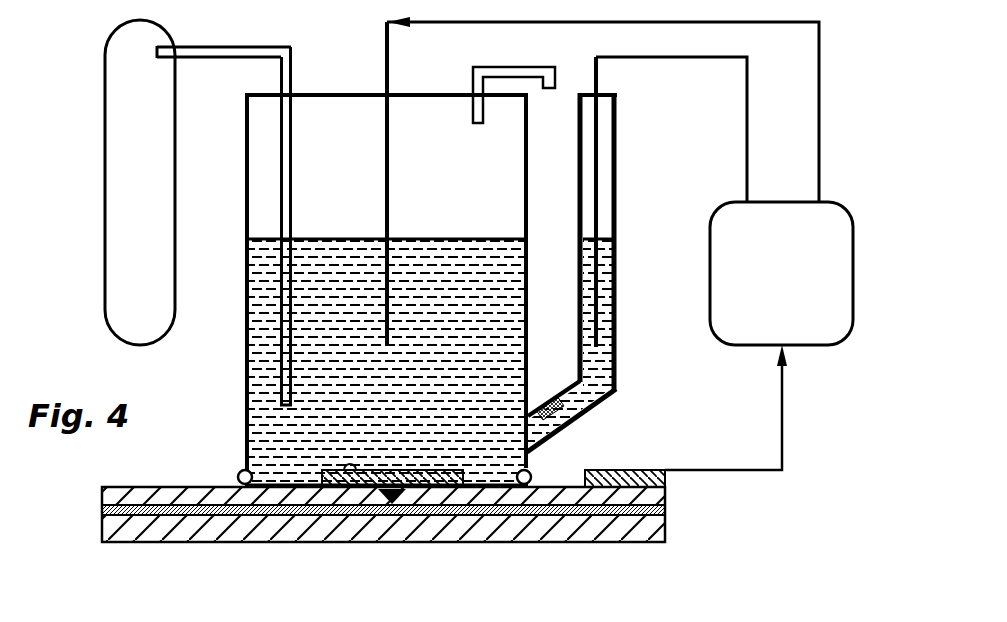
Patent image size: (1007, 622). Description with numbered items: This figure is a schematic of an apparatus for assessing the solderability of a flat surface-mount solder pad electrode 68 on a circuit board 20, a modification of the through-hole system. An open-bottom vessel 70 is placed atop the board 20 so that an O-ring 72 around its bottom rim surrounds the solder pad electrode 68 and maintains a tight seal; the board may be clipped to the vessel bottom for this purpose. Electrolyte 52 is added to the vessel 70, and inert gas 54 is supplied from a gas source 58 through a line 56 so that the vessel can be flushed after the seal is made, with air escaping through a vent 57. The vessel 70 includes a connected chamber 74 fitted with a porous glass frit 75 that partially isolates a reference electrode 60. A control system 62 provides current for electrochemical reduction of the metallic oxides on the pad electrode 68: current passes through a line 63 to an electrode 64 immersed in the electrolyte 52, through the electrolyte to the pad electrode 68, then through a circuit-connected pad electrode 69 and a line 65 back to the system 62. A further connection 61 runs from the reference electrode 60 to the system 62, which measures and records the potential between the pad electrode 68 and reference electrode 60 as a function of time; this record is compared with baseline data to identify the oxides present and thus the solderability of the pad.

The circuit board 20 is at (216, 520).
The electrolyte 52 is at (247, 375).
The inert gas 54 is at (262, 205).
The line 56 is at (242, 46).
The vent 57 is at (490, 67).
The gas source 58 is at (124, 182).
The reference electrode 60 is at (596, 80).
The line 61 is at (680, 57).
The control system 62 is at (769, 284).
The line 63 is at (740, 23).
The electrode 64 is at (386, 58).
The line 65 is at (782, 390).
The solder pad electrode 68 is at (339, 470).
The circuit-connected pad electrode 69 is at (648, 470).
The vessel 70 is at (246, 136).
The O-ring 72 is at (238, 478).
The chamber 74 is at (612, 345).
The porous glass frit 75 is at (548, 402).